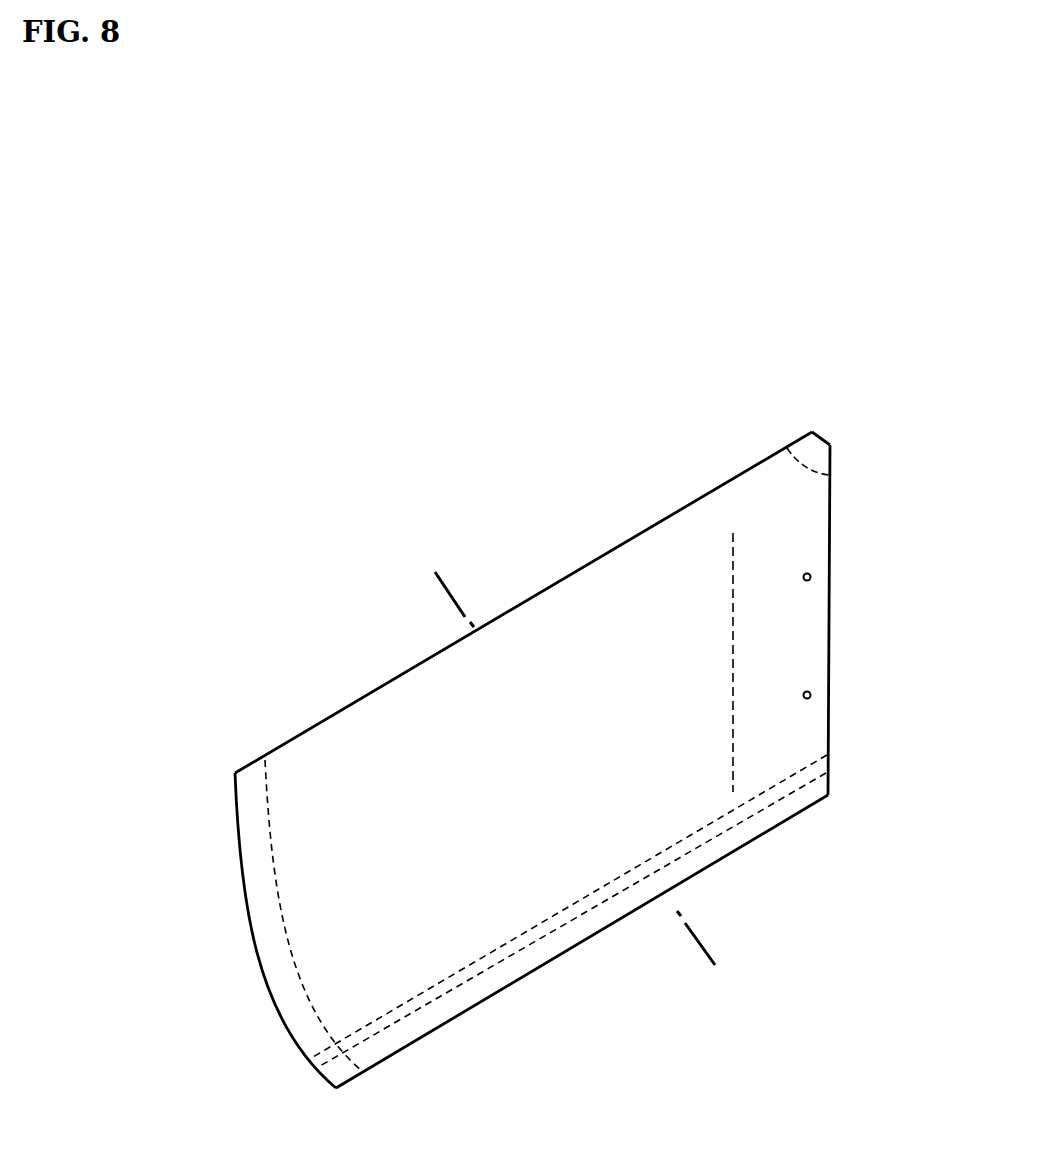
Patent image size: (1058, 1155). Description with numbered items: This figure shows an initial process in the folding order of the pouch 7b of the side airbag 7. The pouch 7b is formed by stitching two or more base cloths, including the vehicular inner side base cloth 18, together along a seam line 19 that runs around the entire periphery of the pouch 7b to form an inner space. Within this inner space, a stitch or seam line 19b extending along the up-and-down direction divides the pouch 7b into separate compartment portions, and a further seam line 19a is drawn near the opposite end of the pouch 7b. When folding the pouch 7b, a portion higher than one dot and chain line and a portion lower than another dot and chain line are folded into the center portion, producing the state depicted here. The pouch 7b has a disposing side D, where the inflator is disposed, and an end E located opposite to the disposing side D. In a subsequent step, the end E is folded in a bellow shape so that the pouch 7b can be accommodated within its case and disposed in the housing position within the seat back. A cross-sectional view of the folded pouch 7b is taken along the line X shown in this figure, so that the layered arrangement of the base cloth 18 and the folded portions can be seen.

The side airbag 7 is at (509, 760).
The pouch 7b is at (562, 577).
The base cloth 18 is at (817, 518).
The disposing side D is at (810, 640).
The end E is at (307, 932).
The seam line 19 is at (496, 913).
The curved fold line 19a is at (282, 868).
The seam line 19b is at (763, 788).
The line X- X is at (448, 597).